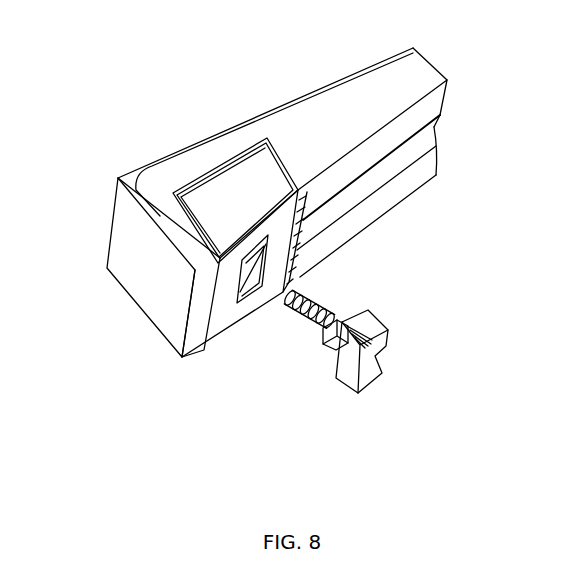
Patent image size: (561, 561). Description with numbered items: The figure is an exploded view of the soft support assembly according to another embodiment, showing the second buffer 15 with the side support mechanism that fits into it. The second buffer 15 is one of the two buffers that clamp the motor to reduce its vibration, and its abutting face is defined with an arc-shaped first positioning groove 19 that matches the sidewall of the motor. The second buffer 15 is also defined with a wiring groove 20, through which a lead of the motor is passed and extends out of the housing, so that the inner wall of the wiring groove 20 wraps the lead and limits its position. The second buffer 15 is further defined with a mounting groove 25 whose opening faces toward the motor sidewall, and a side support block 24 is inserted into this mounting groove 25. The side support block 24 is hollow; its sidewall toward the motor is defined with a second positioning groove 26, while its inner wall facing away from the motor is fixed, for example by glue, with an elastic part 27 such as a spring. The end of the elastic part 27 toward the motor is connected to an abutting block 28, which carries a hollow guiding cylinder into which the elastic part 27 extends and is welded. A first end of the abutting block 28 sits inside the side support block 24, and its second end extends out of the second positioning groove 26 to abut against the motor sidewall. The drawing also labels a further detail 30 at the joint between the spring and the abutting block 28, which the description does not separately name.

The second buffer 15 is at (322, 118).
The first positioning groove 19 is at (403, 150).
The wiring groove 20 is at (158, 216).
The side support block 24 is at (208, 195).
The mounting groove 25 is at (277, 160).
The second positioning groove 26 is at (248, 307).
The elastic part 27 is at (308, 302).
The abutting block 28 is at (381, 318).
The connector block 30 is at (352, 318).